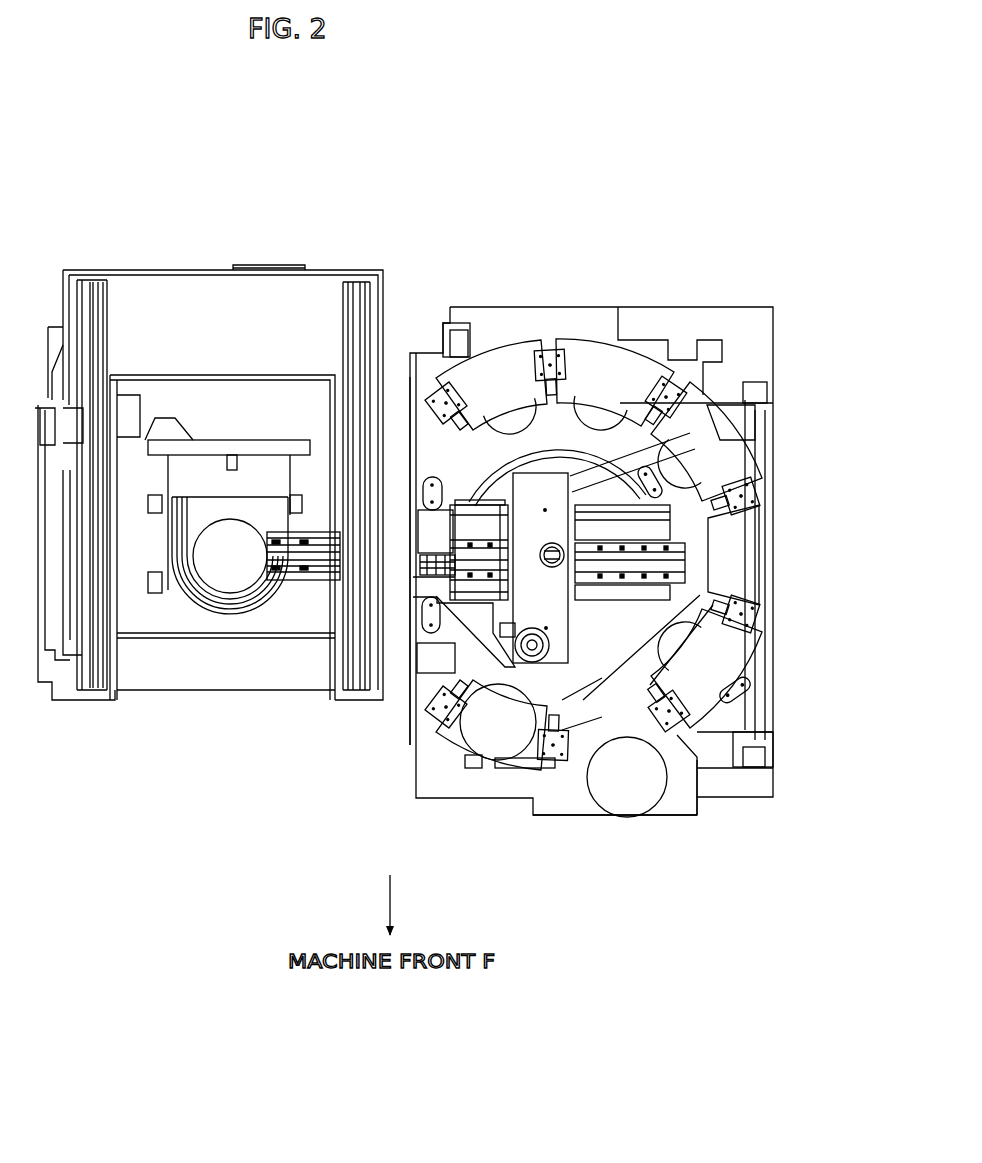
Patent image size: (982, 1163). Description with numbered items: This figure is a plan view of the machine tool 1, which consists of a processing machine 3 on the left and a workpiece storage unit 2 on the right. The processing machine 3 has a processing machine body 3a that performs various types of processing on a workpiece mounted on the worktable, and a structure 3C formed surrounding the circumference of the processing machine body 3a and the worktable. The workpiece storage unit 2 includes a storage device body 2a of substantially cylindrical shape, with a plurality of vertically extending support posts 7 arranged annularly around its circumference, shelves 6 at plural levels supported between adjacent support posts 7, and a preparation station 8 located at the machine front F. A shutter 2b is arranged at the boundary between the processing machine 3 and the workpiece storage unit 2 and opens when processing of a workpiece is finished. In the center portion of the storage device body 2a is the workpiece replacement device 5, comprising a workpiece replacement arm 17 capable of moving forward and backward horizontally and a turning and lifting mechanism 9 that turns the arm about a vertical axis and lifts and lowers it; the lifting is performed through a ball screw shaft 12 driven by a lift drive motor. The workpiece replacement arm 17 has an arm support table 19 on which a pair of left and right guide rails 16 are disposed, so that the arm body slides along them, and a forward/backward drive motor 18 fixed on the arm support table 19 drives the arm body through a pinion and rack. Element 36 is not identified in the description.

The machine tool 1 is at (445, 166).
The workpiece storage unit 2 is at (677, 279).
The storage device body 2a is at (763, 470).
The shutter 2b is at (418, 453).
The processing machine 3 is at (241, 216).
The structure 3C is at (318, 262).
The processing machine body 3a is at (232, 437).
The workpiece replacement device 5 is at (437, 648).
The shelf 6 is at (481, 368).
The support post 7 is at (552, 360).
The preparation station 8 is at (682, 816).
The turning and lifting mechanism 9 is at (487, 658).
The ball screw shaft 12 is at (532, 652).
The guide rail 16 is at (690, 553).
The workpiece replacement arm 17 is at (318, 583).
The forward/backward drive motor 18 is at (432, 497).
The arm support table 19 is at (690, 585).
The spindle head 36 is at (193, 598).